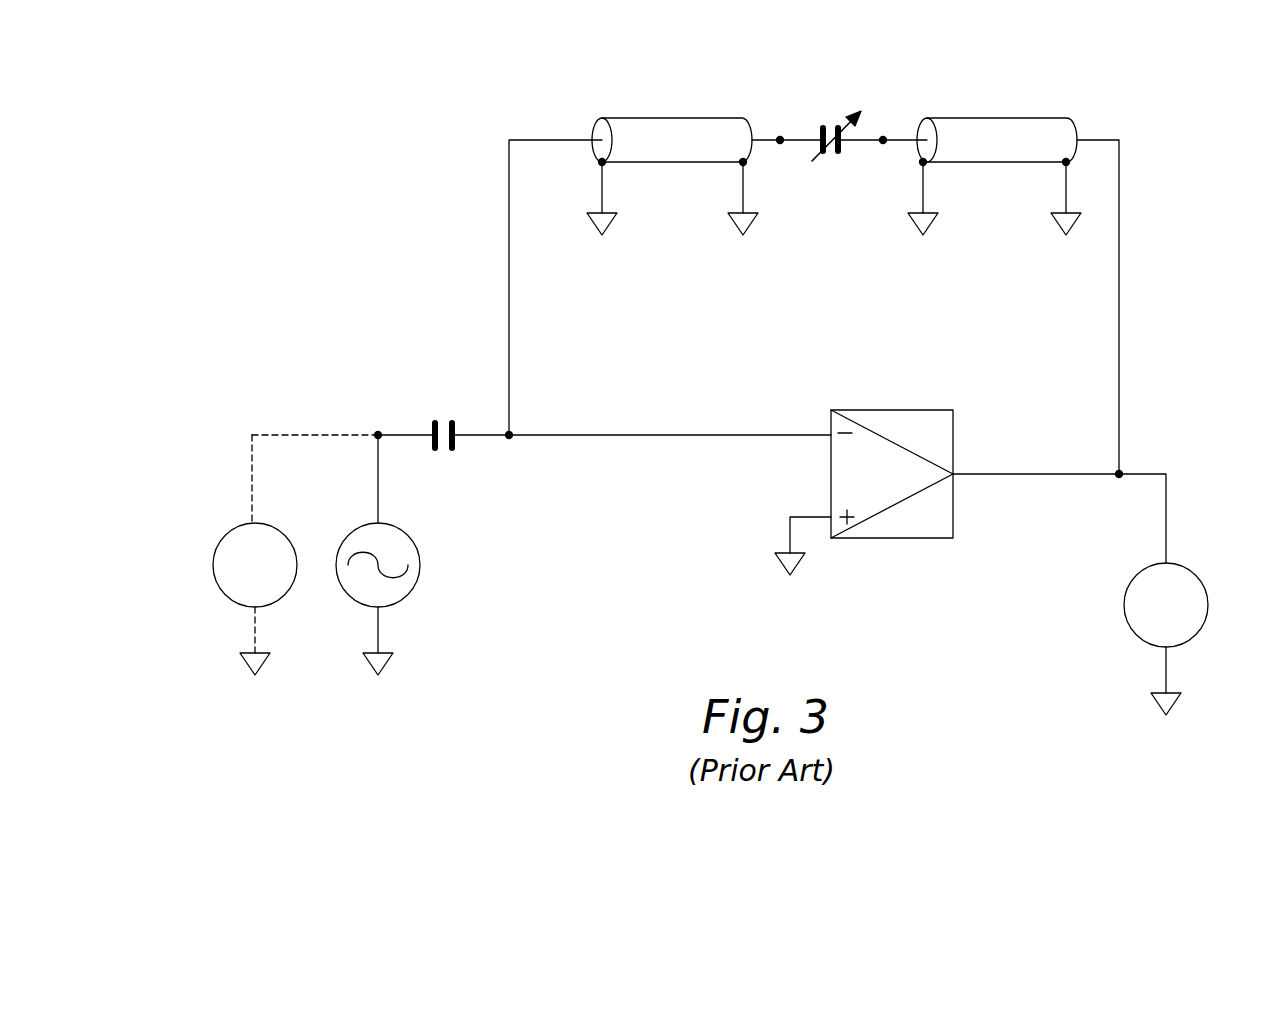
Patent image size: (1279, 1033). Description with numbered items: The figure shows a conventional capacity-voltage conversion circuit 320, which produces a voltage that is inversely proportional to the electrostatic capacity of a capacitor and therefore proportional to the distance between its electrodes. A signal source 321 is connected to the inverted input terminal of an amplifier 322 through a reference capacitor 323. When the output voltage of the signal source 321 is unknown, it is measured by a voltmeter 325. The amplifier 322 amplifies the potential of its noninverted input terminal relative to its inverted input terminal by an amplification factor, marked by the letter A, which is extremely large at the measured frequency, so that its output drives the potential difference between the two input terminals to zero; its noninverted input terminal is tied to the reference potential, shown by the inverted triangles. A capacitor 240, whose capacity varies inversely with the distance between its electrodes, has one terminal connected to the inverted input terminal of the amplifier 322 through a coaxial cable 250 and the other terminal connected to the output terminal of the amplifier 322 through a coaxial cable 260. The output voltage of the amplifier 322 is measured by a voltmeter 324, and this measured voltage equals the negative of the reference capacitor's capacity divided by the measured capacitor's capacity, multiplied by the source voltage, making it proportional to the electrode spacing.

The capacity-voltage conversion circuit 320 is at (312, 71).
The coaxial cable 250 is at (674, 118).
The coaxial cable 260 is at (995, 118).
The capacitor 240 is at (841, 152).
The reference capacitor 323 is at (436, 421).
The voltmeter 325 is at (222, 536).
The signal source 321 is at (412, 591).
The amplifier 322 is at (893, 538).
The voltmeter 324 is at (1194, 571).